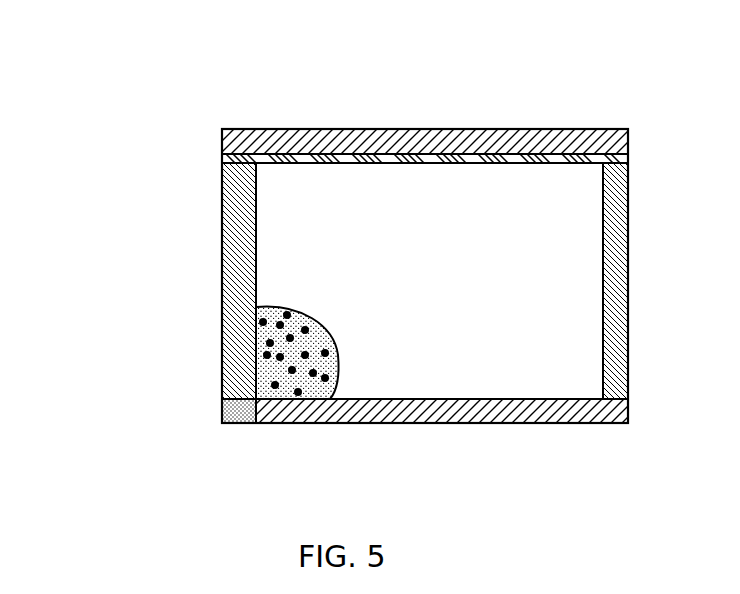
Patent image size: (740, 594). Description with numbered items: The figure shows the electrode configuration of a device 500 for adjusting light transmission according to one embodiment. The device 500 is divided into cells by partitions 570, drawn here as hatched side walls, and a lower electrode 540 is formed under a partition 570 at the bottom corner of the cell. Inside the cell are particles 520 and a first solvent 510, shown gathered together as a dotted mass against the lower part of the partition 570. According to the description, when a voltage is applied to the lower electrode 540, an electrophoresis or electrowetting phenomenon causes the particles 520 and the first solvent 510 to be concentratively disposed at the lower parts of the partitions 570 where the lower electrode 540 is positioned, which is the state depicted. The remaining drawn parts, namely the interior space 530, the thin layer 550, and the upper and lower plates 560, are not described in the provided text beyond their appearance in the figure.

The device for adjusting light transmission 500 is at (165, 32).
The first solvent 510 is at (256, 301).
The particles 520 is at (256, 336).
The cavity 530 is at (280, 227).
The lower electrode 540 is at (222, 407).
The electrode layer 550 is at (237, 160).
The substrate 560 is at (237, 146).
The partitions 570 is at (235, 352).